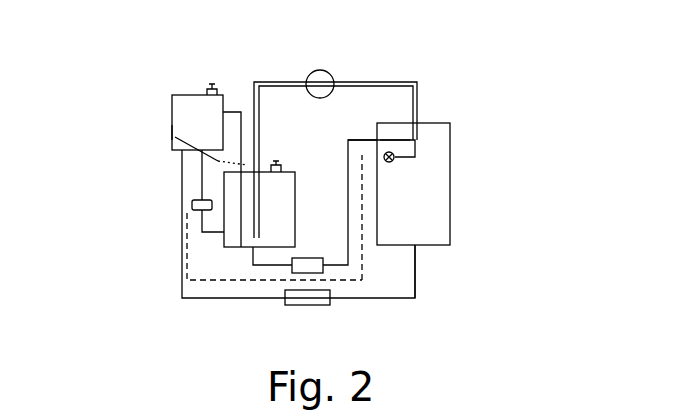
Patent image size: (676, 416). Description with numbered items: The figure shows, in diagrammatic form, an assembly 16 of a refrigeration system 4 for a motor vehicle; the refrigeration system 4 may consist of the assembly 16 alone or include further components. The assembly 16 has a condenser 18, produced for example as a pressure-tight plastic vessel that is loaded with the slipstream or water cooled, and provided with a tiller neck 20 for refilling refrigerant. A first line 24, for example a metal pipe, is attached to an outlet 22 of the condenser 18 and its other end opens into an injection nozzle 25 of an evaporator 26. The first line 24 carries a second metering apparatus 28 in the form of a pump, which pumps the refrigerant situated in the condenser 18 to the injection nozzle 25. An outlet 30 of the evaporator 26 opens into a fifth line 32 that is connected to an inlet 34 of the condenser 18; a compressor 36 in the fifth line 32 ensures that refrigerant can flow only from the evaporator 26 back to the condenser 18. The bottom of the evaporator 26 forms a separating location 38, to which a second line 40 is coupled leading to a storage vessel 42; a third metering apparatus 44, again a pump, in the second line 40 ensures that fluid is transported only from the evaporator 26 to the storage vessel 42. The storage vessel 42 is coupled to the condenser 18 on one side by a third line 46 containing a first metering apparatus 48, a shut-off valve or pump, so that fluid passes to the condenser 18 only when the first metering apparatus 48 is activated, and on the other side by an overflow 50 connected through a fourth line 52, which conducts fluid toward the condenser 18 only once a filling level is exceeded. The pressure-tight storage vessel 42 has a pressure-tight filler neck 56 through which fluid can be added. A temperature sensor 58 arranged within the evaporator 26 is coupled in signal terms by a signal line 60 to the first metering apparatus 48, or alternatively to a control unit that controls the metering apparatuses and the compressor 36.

The refrigeration system 4 is at (118, 72).
The assembly 16 is at (450, 50).
The condenser 18 is at (253, 247).
The tiller neck 20 is at (281, 161).
The outlet 22 is at (253, 248).
The first line 24 is at (285, 280).
The injection nozzle 25 is at (395, 140).
The evaporator 26 is at (450, 143).
The second metering apparatus 28 is at (302, 257).
The outlet 30 is at (419, 116).
The fifth line 32 is at (345, 82).
The inlet 34 is at (262, 173).
The compressor 36 is at (318, 70).
The separating location 38 is at (437, 241).
The second line 40 is at (418, 280).
The storage vessel 42 is at (170, 126).
The third metering apparatus 44 is at (318, 305).
The third line 46 is at (200, 183).
The first metering apparatus 48 is at (192, 205).
The overflow 50 is at (220, 108).
The fourth line 52 is at (172, 131).
The filler neck 56 is at (211, 84).
The temperature sensor 58 is at (410, 157).
The signal line 60 is at (367, 277).